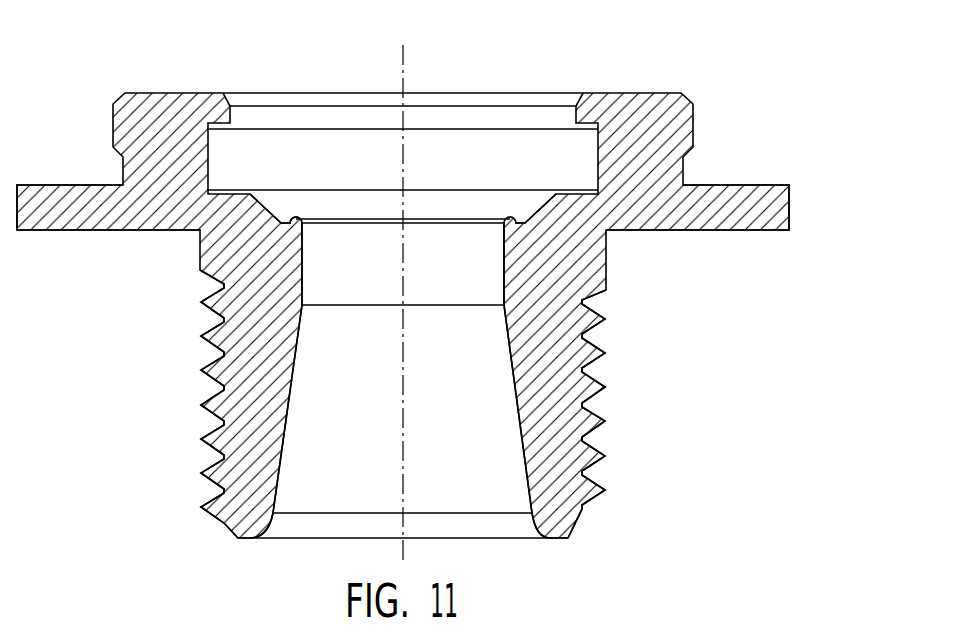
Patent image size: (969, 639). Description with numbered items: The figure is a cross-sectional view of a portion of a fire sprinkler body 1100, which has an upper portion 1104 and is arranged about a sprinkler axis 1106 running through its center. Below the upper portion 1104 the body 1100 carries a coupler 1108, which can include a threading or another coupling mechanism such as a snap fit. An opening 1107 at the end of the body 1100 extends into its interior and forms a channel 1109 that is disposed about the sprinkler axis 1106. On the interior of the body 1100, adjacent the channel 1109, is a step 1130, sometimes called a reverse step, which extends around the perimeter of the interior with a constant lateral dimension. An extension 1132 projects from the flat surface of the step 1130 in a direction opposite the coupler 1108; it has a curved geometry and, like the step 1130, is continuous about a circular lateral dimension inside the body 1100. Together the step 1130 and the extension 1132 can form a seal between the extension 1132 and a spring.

The body 1100 is at (127, 67).
The upper portion 1104 is at (788, 208).
The sprinkler axis 1106 is at (405, 78).
The opening 1107 is at (287, 530).
The coupler 1108 is at (607, 355).
The channel 1109 is at (472, 488).
The step 1130 is at (518, 205).
The extension 1132 is at (340, 218).